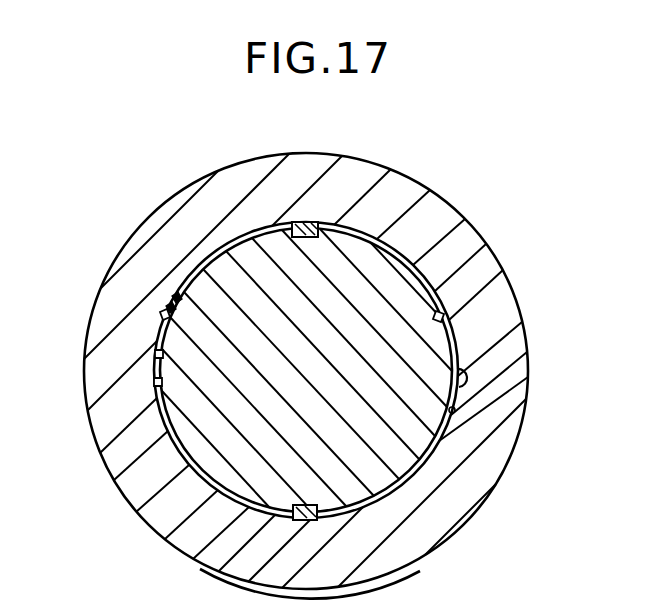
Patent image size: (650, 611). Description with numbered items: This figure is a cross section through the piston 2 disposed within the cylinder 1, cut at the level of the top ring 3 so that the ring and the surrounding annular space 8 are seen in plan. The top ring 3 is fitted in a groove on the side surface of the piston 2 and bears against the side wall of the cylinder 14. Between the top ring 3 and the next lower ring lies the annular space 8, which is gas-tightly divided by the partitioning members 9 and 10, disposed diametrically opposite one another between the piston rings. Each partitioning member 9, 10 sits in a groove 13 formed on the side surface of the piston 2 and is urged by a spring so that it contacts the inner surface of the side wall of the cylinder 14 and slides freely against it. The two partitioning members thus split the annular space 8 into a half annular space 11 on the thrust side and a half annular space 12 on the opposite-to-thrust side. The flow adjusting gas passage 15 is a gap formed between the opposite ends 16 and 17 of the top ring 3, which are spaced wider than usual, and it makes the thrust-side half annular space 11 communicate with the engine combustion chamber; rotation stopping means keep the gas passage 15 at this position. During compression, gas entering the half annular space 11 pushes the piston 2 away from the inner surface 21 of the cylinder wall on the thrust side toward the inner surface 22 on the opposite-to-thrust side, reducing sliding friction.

The cylinder 1 is at (497, 325).
The piston 2 is at (430, 433).
The top ring 3 is at (225, 247).
The annular space 8 is at (217, 486).
The partitioning member 9 is at (219, 566).
The partitioning member 10 is at (309, 222).
The half annular space on the thrust side 11 is at (452, 252).
The half annular space on the opposite-to-thrust side 12 is at (157, 355).
The groove 13 is at (465, 379).
The cylinder side wall 14 is at (447, 312).
The flow adjusting gas passage 15 is at (165, 303).
The end of the piston ring 16 is at (178, 292).
The end of the piston ring 17 is at (162, 316).
The inner surface of the cylinder side wall on the thrust side 21 is at (456, 411).
The inner surface of the cylinder side wall on the opposite-to-thrust side 22 is at (157, 392).